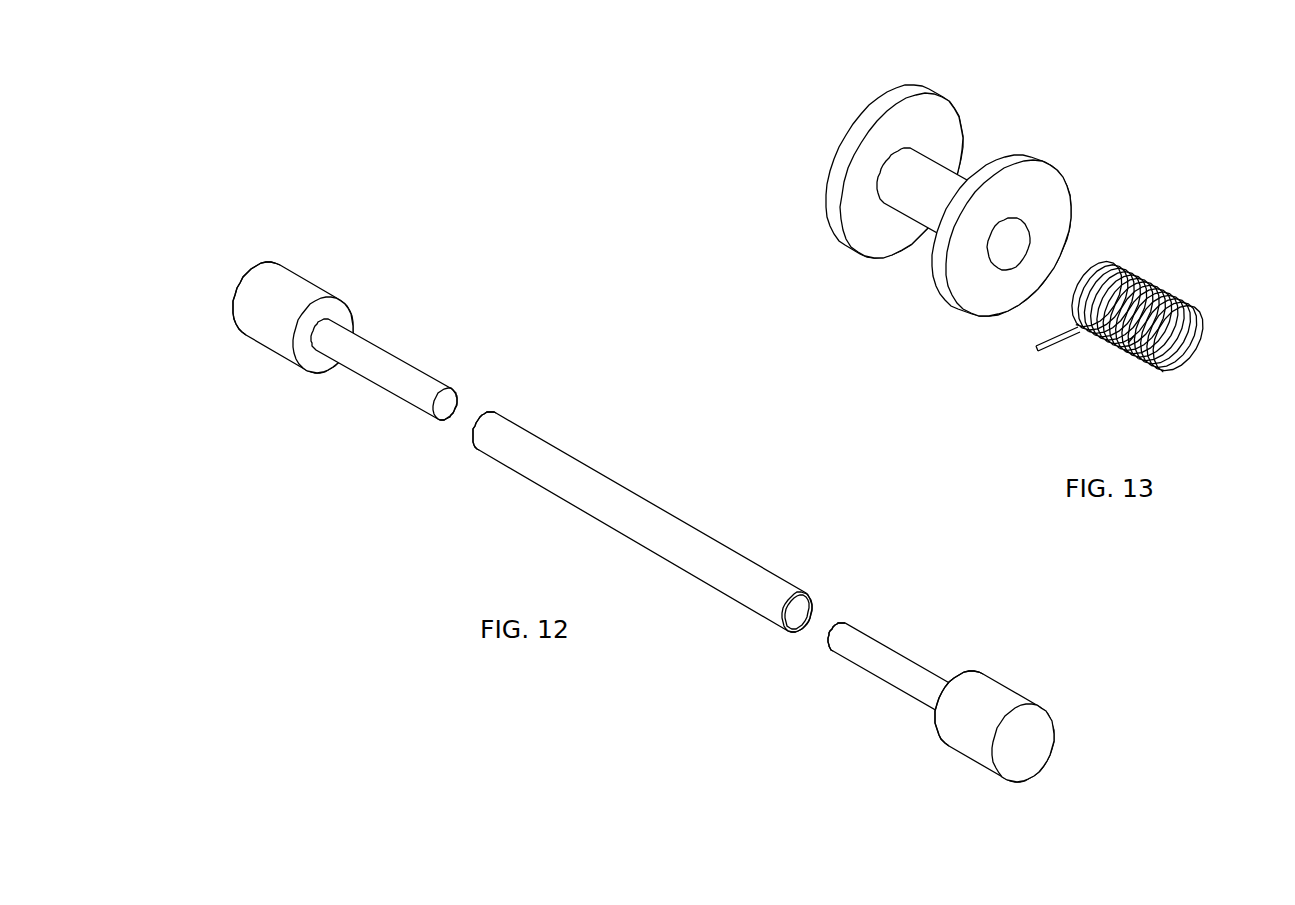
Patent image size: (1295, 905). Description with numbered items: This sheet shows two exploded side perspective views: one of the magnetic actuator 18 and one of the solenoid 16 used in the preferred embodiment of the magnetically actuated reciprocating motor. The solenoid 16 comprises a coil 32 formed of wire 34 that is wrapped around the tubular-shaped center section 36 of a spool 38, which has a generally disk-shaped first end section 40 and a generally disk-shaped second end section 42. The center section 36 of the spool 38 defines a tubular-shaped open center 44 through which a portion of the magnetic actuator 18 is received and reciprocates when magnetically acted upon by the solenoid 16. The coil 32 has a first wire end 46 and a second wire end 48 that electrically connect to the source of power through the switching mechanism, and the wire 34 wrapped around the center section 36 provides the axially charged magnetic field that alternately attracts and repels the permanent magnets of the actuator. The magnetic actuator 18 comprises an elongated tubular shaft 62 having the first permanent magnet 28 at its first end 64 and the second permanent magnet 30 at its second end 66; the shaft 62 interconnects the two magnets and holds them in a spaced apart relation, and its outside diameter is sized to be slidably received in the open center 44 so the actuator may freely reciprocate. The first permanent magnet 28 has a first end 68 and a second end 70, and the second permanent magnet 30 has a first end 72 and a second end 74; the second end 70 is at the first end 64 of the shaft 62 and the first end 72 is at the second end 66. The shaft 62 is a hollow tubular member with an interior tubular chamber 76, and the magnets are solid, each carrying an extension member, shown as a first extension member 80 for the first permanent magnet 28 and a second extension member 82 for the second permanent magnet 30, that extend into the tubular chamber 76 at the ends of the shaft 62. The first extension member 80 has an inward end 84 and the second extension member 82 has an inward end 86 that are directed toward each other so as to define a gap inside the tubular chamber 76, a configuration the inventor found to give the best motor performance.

In FIG. 13, the solenoid 16 is at (1050, 233).
In FIG. 12, the magnetic actuator 18 is at (684, 523).
In FIG. 12, the first permanent magnet 28 is at (982, 745).
In FIG. 12, the second permanent magnet 30 is at (277, 337).
In FIG. 13, the coil 32 is at (1143, 326).
In FIG. 13, the wire 34 is at (1127, 285).
In FIG. 13, the center section 36 is at (923, 205).
In FIG. 13, the spool 38 is at (972, 214).
In FIG. 13, the first end section 40 is at (1044, 190).
In FIG. 13, the second end section 42 is at (930, 118).
In FIG. 13, the open center 44 is at (1000, 249).
In FIG. 13, the first wire end 46 is at (1128, 343).
In FIG. 13, the second wire end 48 is at (1050, 345).
In FIG. 12, the shaft 62 is at (684, 523).
In FIG. 12, the first end 64 is at (831, 611).
In FIG. 12, the second end 66 is at (510, 412).
In FIG. 12, the first end 68 is at (988, 778).
In FIG. 12, the second end 70 is at (932, 740).
In FIG. 12, the first end 72 is at (297, 373).
In FIG. 12, the second end 74 is at (235, 335).
In FIG. 12, the tubular chamber 76 is at (794, 612).
In FIG. 12, the first extension member 80 is at (904, 644).
In FIG. 12, the second extension member 82 is at (388, 403).
In FIG. 12, the inward end 84 is at (855, 622).
In FIG. 12, the inward end 86 is at (428, 422).